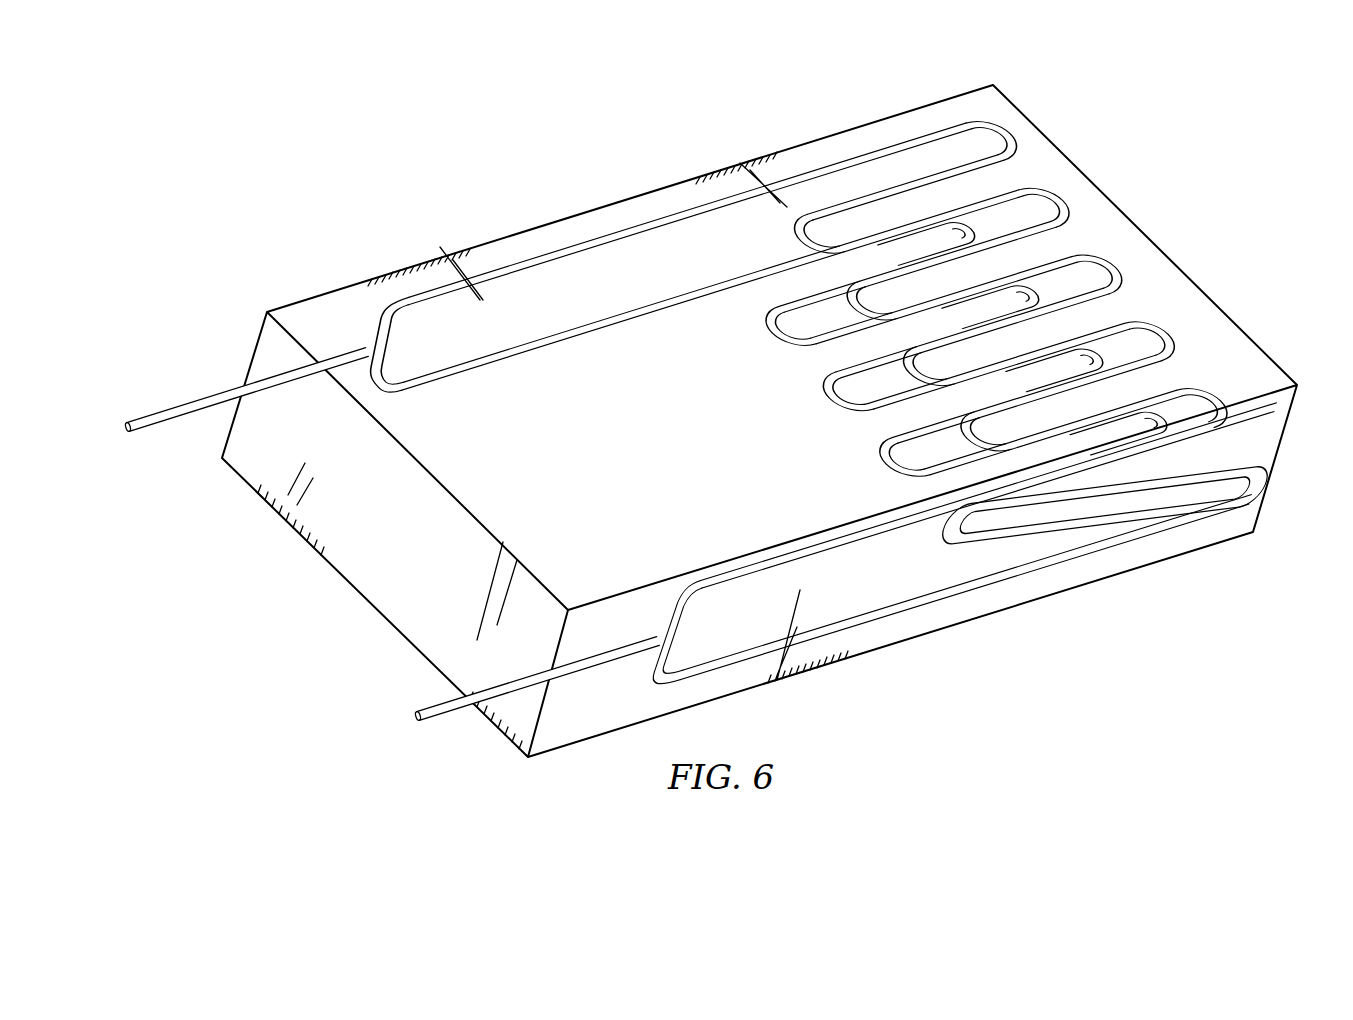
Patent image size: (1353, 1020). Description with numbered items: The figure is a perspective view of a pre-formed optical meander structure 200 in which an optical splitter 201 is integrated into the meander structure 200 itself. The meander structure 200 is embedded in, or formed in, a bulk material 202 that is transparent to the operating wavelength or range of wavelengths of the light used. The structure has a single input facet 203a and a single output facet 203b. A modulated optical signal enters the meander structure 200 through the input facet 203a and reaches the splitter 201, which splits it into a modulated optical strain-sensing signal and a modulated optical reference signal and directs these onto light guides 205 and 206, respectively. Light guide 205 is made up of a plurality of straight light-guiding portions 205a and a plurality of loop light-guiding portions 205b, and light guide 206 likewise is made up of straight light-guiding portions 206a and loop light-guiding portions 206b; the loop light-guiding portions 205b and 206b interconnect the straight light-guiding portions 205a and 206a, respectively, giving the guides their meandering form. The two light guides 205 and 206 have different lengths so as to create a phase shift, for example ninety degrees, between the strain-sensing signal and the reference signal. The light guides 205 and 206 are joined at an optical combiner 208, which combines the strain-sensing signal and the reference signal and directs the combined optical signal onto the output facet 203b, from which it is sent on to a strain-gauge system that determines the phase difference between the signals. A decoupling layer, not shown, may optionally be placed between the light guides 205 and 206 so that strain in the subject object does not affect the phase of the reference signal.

The pre-formed optical meander structure 200 is at (722, 437).
The optical splitter 201 is at (370, 352).
The bulk material 202 is at (895, 634).
The input facet 203a is at (180, 410).
The output facet 203b is at (437, 722).
The light guide 205 is at (545, 249).
The straight light-guiding portions 205a is at (892, 152).
The loop light-guiding portions 205b is at (805, 254).
The light guide 206 is at (518, 352).
The straight light-guiding portions 206a is at (880, 346).
The loop light-guiding portions 206b is at (778, 325).
The optical combiner 208 is at (662, 632).